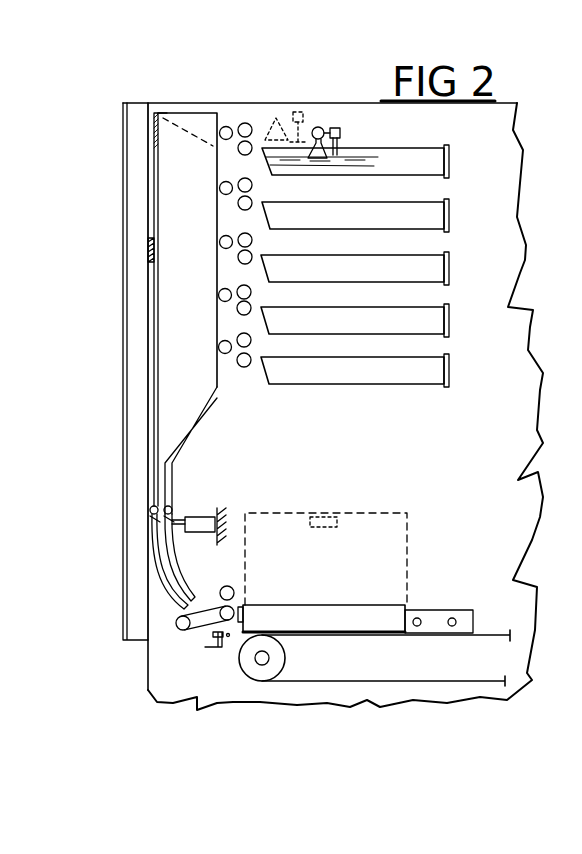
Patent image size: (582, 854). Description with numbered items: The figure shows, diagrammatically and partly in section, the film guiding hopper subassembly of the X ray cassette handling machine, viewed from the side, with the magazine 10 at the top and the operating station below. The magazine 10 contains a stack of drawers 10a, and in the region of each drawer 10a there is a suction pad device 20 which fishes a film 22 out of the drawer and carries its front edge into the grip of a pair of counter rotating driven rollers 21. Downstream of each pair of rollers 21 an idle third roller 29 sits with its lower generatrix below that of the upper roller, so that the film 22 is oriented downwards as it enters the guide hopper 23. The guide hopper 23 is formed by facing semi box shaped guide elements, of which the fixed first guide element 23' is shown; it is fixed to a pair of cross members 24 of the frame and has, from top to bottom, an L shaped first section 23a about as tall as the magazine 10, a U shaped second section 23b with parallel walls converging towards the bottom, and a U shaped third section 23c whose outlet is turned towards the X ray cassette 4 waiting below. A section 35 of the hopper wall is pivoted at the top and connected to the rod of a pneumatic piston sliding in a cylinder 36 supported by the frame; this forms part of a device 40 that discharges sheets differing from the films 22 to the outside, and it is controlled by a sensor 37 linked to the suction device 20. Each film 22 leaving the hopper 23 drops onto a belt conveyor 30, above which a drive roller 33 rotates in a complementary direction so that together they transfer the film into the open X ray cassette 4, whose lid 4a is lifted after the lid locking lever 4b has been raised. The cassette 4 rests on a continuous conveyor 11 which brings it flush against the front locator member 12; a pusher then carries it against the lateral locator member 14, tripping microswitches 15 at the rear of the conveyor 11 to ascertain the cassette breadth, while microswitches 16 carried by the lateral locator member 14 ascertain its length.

The magazine 10 is at (470, 165).
The drawer 10a is at (432, 172).
The continuous conveyor 11 is at (432, 637).
The front locator member 12 is at (245, 614).
The lateral locator member 14 is at (473, 623).
The microswitches 15 is at (222, 648).
The microswitches 16 is at (452, 618).
The suction pad device 20 is at (318, 126).
The counter rotating driven rollers 21 is at (242, 142).
The film 22 is at (121, 101).
The guide hopper 23 is at (110, 371).
The first guide element 23' is at (120, 309).
The first L shaped section 23a is at (207, 279).
The second U shaped section 23b is at (177, 413).
The third U shaped section 23c is at (170, 584).
The cross members 24 is at (148, 246).
The third idle roller 29 is at (220, 129).
The belt conveyor 30 is at (197, 624).
The drive roller 33 is at (236, 591).
The inclinable wall section 35 is at (150, 523).
The cylinder 36 is at (198, 520).
The sensor 37 is at (340, 128).
The discharge device 40 is at (107, 470).
The X ray cassette 4 is at (333, 628).
The lid 4a is at (270, 510).
The lid locking lever 4b is at (323, 520).